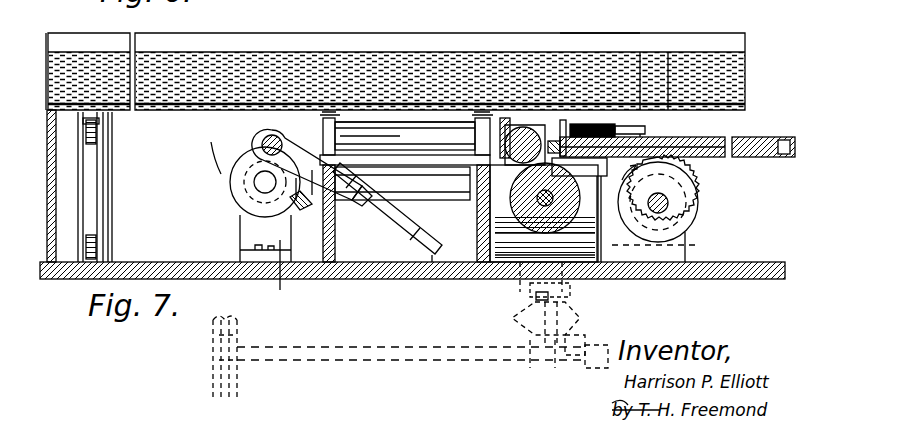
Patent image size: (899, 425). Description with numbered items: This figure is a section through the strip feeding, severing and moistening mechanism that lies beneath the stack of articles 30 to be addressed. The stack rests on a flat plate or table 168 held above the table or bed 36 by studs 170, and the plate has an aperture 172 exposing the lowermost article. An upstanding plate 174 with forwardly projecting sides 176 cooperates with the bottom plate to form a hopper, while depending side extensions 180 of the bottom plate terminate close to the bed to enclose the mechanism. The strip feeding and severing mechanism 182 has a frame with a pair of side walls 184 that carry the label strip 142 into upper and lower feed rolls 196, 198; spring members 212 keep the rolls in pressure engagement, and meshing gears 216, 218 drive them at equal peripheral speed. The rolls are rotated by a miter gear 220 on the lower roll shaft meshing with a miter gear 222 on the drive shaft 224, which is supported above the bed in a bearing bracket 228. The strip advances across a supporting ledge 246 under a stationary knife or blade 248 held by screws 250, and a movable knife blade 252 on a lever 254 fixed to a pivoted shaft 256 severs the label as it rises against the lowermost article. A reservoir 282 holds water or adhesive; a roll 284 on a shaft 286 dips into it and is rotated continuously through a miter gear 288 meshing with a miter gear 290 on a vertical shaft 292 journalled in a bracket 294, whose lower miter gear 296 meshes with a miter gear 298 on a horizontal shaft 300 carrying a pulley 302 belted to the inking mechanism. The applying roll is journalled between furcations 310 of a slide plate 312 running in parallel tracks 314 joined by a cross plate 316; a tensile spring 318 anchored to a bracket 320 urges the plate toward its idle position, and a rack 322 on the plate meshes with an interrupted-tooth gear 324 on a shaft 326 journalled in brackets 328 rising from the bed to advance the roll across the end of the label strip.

The stack of articles 30 is at (266, 52).
The table or bed 36 is at (182, 262).
The label strip 142 is at (456, 200).
The flat plate or table 168 is at (172, 112).
The studs 170 is at (100, 202).
The aperture 172 is at (436, 60).
The upstanding plate 174 is at (594, 40).
The forwardly projecting sides 176 is at (55, 36).
The depending side extensions 180 is at (48, 182).
The strip feeding and severing mechanism 182 is at (258, 124).
The side walls 184 is at (464, 222).
The upper feed roll 196 is at (380, 122).
The lower feed roll 198 is at (396, 178).
The spring members 212 is at (368, 130).
The gear 216 is at (520, 125).
The gear 218 is at (530, 125).
The miter gear 220 is at (304, 203).
The miter gear 222 is at (240, 196).
The drive shaft 224 is at (254, 182).
The bearing bracket 228 is at (275, 272).
The supporting ledge 246 is at (356, 209).
The stationary knife or blade 248 is at (280, 138).
The screws 250 is at (292, 150).
The knife blade 252 is at (407, 235).
The lever 254 is at (432, 255).
The shaft 256 is at (328, 112).
The reservoir 282 is at (584, 264).
The roll 284 is at (561, 231).
The shaft 286 is at (578, 208).
The miter gear 288 is at (548, 208).
The miter gear 290 is at (561, 249).
The vertical shaft 292 is at (525, 291).
The bracket 294 is at (522, 302).
The miter gear 296 is at (586, 332).
The miter gear 298 is at (592, 342).
The horizontal shaft 300 is at (327, 346).
The pulley 302 is at (246, 386).
The furcations 310 is at (566, 130).
The slide plate 312 is at (686, 142).
The parallel tracks 314 is at (470, 133).
The cross plate 316 is at (643, 56).
The tensile spring 318 is at (600, 125).
The bracket 320 is at (666, 56).
The rack 322 is at (762, 158).
The gear 324 is at (704, 220).
The shaft 326 is at (668, 205).
The brackets 328 is at (697, 247).